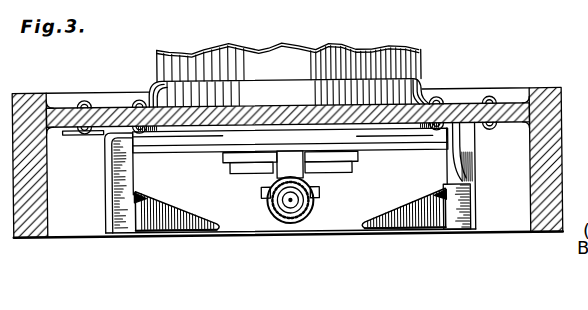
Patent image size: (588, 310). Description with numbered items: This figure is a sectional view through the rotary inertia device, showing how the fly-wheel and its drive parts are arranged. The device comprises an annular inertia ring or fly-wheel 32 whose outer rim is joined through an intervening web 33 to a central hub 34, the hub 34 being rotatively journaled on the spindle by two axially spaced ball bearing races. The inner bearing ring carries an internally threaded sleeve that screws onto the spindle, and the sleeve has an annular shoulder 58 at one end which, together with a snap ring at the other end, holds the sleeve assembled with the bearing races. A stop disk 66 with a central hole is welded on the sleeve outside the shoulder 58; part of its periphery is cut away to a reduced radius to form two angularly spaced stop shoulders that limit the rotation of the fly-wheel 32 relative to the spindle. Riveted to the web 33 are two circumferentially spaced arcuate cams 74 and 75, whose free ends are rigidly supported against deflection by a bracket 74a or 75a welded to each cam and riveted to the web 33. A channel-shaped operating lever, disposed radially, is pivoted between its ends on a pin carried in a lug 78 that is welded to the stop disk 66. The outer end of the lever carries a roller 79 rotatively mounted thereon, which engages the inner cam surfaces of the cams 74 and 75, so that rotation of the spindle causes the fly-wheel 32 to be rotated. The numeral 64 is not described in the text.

The inertia ring 32 is at (562, 113).
The web 33 is at (489, 105).
The hub 34 is at (392, 64).
The annular shoulder 58 is at (328, 174).
The slide plate 64 is at (353, 165).
The stop disk 66 is at (200, 145).
The arcuate cam 74 is at (163, 227).
The bracket 74a is at (112, 181).
The arcuate cam 75 is at (380, 213).
The bracket 75a is at (463, 212).
The lug 78 is at (287, 163).
The roller 79 is at (297, 225).